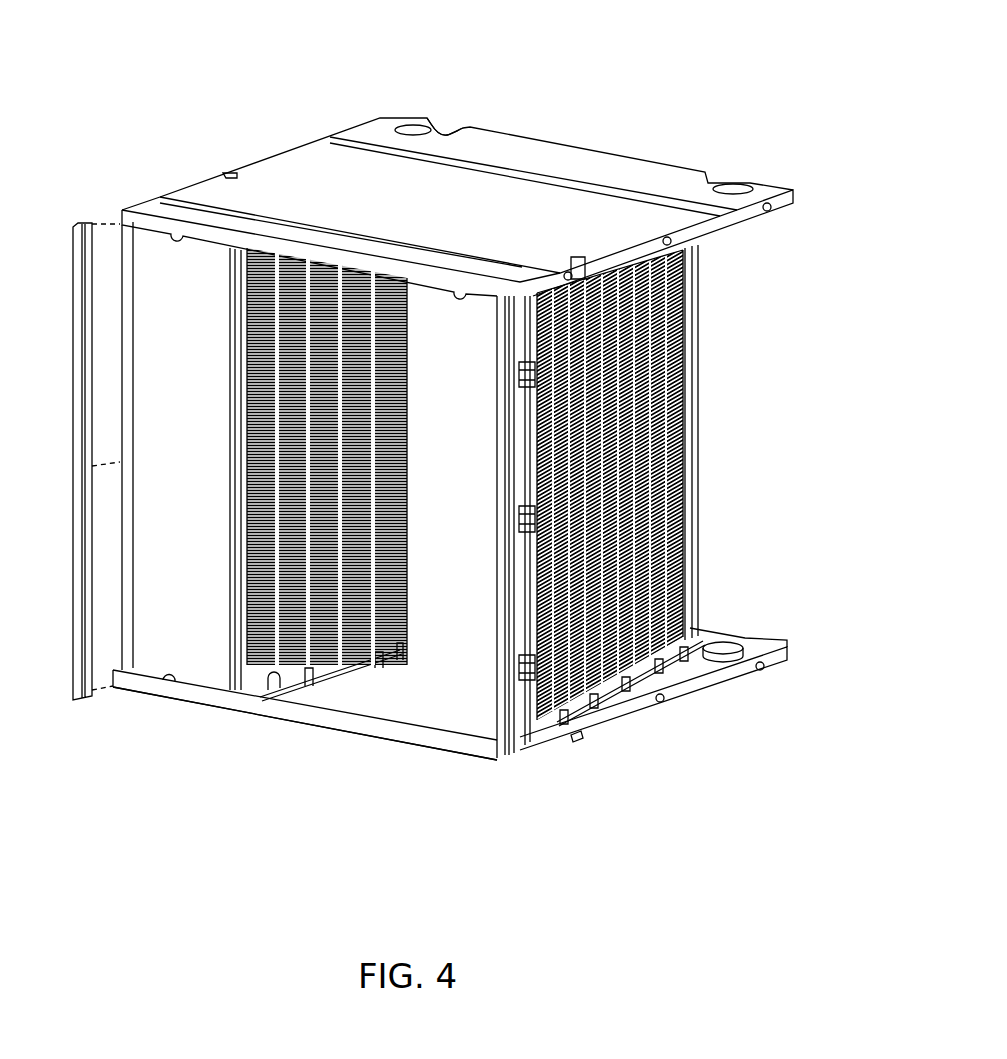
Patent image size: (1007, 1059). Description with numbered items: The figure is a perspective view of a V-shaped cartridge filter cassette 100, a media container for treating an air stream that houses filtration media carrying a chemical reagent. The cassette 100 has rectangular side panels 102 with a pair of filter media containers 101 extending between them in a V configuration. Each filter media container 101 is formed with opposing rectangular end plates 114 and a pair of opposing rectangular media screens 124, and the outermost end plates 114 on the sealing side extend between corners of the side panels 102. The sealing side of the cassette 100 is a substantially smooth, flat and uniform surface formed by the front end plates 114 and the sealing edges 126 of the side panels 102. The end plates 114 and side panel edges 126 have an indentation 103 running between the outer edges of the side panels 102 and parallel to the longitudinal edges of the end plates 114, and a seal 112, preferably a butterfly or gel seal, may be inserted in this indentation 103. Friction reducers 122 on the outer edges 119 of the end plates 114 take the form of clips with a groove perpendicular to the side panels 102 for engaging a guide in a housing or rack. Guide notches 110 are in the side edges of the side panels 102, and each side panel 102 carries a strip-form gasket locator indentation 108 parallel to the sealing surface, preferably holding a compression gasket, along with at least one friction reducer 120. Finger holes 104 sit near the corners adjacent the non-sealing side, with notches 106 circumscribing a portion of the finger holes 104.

The filter cassette 100 is at (152, 74).
The filter media container 101 is at (155, 305).
The side panel 102 is at (304, 160).
The indentation 103 is at (134, 546).
The finger hole 104 is at (412, 122).
The notch 106 is at (466, 129).
The gasket locator indentation 108 is at (352, 137).
The guide notch 110 is at (228, 172).
The seal 112 is at (80, 222).
The end plate 114 is at (140, 660).
The outer edge 119 is at (522, 734).
The friction reducer 120 is at (572, 270).
The friction reducer 122 is at (519, 374).
The media screen 124 is at (688, 347).
The sealing edge 126 is at (388, 734).